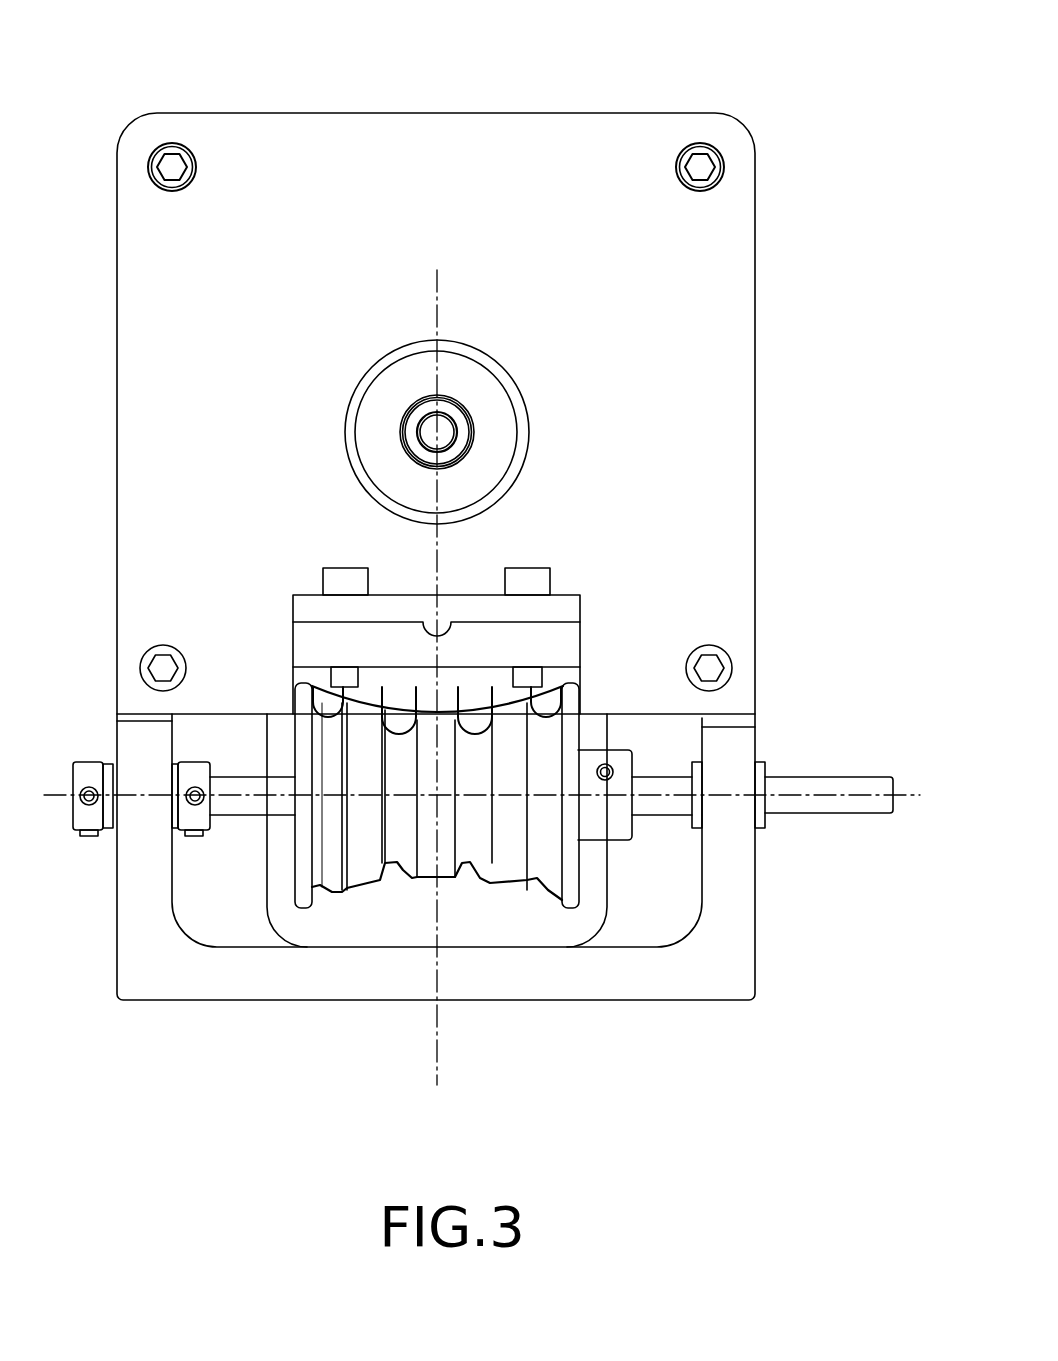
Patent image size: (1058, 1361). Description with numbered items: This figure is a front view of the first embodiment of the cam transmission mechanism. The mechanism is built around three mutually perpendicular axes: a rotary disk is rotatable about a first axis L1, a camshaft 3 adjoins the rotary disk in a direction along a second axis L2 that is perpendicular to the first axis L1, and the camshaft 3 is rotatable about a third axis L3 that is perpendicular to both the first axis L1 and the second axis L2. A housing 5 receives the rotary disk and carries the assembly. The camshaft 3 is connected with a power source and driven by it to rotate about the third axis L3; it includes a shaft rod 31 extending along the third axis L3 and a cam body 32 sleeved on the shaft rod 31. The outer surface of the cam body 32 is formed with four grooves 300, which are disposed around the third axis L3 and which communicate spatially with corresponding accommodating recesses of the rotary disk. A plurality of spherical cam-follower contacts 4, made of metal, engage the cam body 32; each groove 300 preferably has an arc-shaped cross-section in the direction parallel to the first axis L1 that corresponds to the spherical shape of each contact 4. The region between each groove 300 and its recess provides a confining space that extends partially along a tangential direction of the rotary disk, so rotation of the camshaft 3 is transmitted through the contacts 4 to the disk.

The camshaft 3 is at (586, 936).
The spherical cam-follower contact 4 is at (397, 716).
The housing 5 is at (533, 130).
The shaft rod 31 is at (835, 805).
The cam body 32 is at (355, 853).
The groove 300 is at (400, 870).
The first axis L1 is at (437, 432).
The second axis L2 is at (442, 697).
The third axis L3 is at (503, 796).